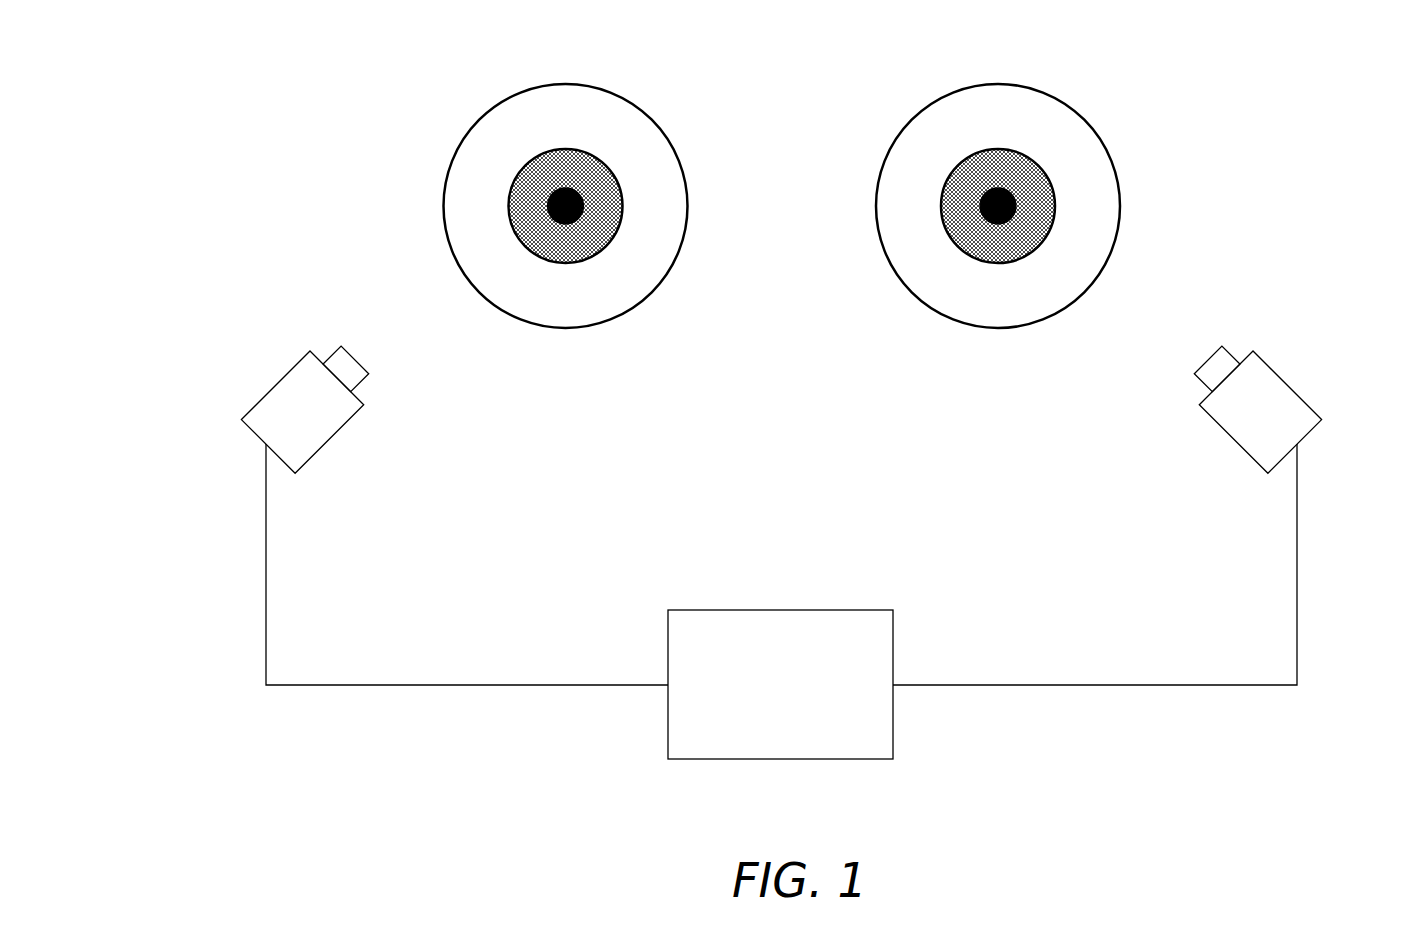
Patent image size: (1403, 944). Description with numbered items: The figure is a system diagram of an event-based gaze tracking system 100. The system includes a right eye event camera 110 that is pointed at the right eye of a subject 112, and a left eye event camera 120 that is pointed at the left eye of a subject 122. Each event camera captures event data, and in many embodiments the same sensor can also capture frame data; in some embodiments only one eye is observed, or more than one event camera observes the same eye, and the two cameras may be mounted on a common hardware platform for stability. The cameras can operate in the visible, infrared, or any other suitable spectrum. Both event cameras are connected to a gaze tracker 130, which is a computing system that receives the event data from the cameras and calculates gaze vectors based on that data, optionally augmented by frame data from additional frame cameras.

The event-based gaze tracking system 100 is at (178, 48).
The right eye event camera 110 is at (275, 384).
The right eye of a subject 112 is at (475, 123).
The left eye event camera 120 is at (1287, 387).
The left eye of a subject 122 is at (1085, 118).
The gaze tracker 130 is at (893, 742).